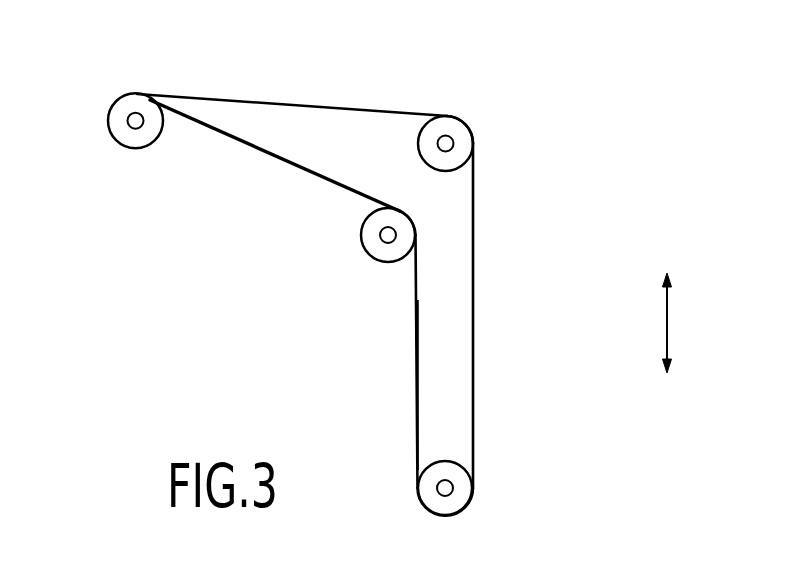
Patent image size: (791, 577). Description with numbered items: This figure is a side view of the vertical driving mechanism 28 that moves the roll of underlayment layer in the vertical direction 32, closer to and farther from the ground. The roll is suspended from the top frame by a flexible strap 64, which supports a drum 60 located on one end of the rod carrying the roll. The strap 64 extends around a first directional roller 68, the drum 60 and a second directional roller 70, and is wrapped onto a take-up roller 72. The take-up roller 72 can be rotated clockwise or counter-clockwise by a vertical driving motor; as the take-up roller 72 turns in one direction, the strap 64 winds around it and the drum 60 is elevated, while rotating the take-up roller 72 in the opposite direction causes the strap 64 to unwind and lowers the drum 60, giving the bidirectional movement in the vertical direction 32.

The vertical driving mechanism 28 is at (488, 328).
The vertical direction 32 is at (667, 323).
The drum 60 is at (460, 476).
The strap 64 is at (418, 387).
The first directional roller 68 is at (373, 242).
The second directional roller 70 is at (445, 125).
The take-up roller 72 is at (114, 113).